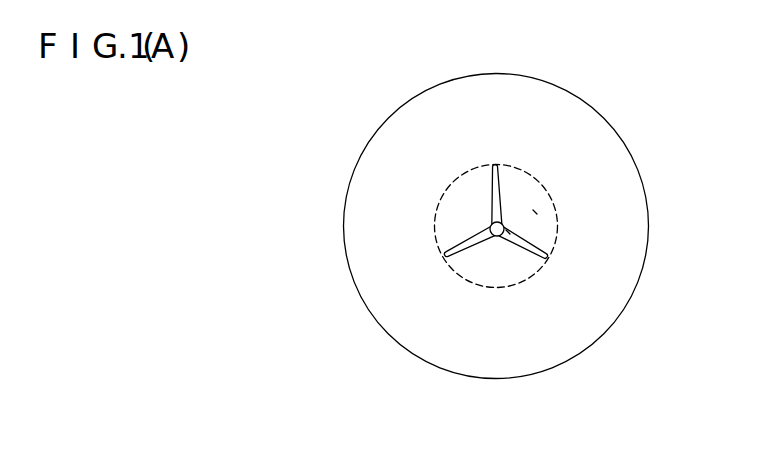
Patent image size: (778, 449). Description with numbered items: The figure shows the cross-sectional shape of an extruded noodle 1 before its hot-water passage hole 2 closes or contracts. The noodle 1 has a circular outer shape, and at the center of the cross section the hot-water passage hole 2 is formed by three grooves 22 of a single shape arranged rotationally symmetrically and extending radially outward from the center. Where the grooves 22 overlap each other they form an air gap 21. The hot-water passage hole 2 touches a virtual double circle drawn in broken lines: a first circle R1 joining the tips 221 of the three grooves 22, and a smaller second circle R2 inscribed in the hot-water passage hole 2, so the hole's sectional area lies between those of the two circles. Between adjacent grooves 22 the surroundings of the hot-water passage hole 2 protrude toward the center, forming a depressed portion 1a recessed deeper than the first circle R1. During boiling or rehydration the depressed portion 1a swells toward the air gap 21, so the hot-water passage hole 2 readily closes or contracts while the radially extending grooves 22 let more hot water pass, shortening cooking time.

The noodle 1 is at (367, 337).
The depressed portion 1a is at (535, 212).
The hot-water passage hole 2 is at (264, 133).
The air gap 21 is at (493, 226).
The grooves 22 is at (412, 138).
The tips 221 is at (495, 163).
The first circle R1 is at (542, 178).
The second circle R2 is at (508, 232).